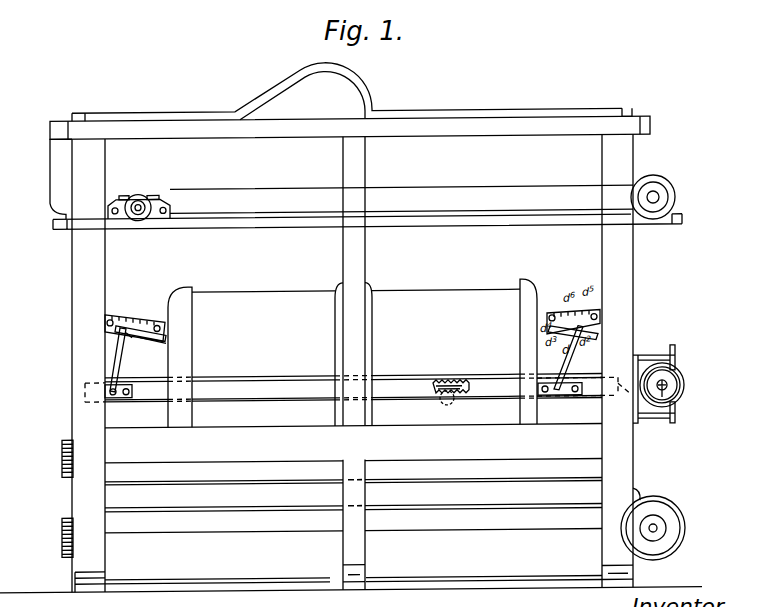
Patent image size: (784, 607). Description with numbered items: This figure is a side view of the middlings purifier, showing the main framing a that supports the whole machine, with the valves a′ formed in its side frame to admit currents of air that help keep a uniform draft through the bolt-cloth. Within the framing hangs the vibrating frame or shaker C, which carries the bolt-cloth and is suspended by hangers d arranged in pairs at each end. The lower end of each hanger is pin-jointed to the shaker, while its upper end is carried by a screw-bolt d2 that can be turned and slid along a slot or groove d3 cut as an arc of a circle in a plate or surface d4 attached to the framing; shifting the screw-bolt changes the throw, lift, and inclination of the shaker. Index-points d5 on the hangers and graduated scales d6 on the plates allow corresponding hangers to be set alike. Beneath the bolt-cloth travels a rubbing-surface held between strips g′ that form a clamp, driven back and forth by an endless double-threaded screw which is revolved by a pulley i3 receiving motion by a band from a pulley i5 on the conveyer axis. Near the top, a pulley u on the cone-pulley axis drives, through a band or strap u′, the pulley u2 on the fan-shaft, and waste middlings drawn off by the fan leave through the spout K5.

The spout K5 is at (61, 179).
The main framing a is at (352, 363).
The valves a′ is at (353, 409).
The vibrating frame or shaker C is at (357, 387).
The band or strap u′ is at (401, 193).
The pulley u2 is at (139, 199).
The pulley u is at (653, 197).
The index-points d5 is at (135, 320).
The graduated scales or indexes d6 is at (140, 323).
The plate or surface d4 is at (154, 338).
The screw-bolt d2 is at (136, 345).
The hangers d is at (118, 360).
The slot or groove d3 is at (118, 387).
The strips of metal or wood g′ is at (451, 397).
The pulley i3 is at (64, 451).
The pulley i5 is at (61, 535).